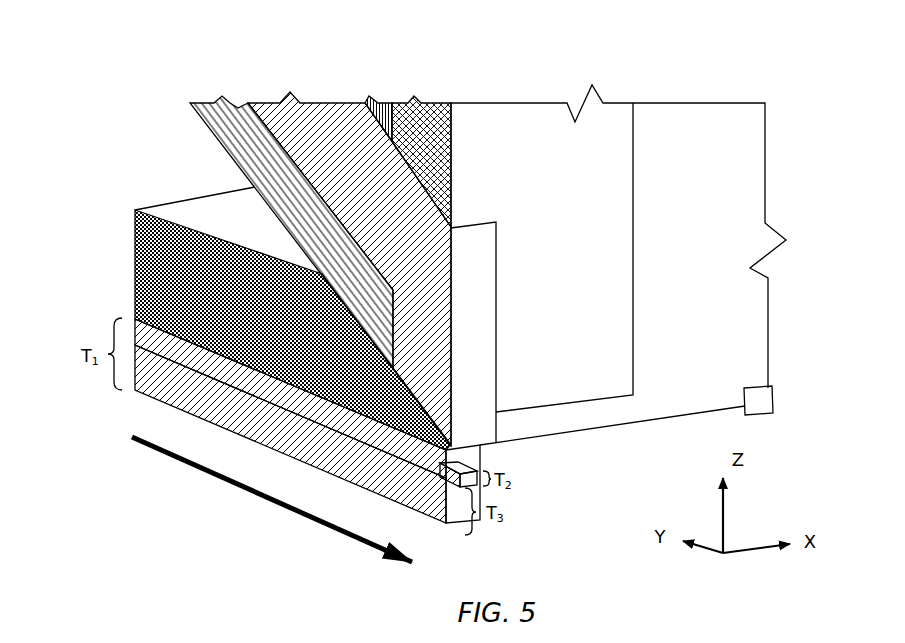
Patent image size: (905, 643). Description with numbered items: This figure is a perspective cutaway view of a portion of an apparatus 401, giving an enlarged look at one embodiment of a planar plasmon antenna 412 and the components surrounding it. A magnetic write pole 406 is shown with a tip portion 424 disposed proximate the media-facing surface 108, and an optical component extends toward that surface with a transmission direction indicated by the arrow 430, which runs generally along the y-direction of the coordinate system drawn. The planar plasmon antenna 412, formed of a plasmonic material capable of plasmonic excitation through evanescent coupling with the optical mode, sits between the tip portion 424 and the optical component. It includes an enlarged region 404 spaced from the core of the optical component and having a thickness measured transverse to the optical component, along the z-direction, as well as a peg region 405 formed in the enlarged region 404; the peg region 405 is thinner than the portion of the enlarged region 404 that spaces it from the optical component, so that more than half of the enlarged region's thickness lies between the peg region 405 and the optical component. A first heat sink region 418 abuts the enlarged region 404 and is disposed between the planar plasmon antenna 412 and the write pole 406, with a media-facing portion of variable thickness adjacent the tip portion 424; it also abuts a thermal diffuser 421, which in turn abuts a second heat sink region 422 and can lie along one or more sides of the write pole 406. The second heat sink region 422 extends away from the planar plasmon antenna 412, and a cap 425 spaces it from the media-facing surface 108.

The apparatus 401 is at (158, 75).
The magnetic write pole 406 is at (317, 104).
The second heat sink region 422 is at (376, 104).
The thermal diffuser 421 is at (283, 208).
The first heat sink region 418 is at (138, 265).
The enlarged region 404 is at (102, 330).
The planar plasmon antenna 412 is at (138, 403).
The peg region 405 is at (483, 470).
The tip portion 424 is at (475, 370).
The cap 425 is at (618, 383).
The media-facing surface 108 is at (757, 417).
The arrow 430 is at (217, 478).